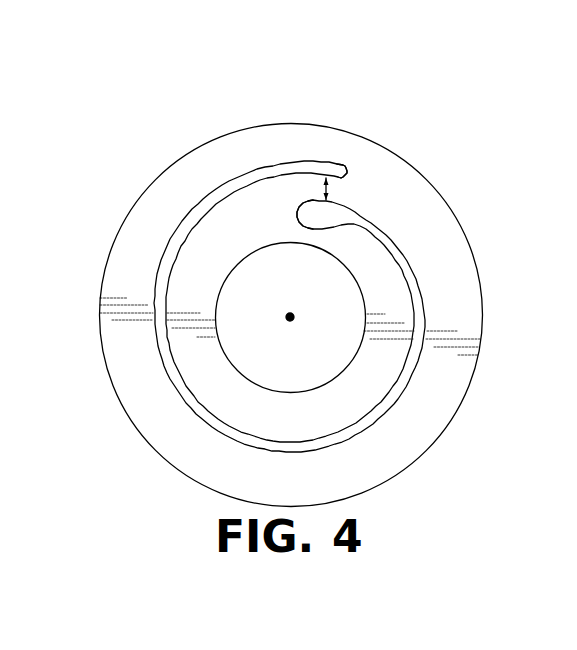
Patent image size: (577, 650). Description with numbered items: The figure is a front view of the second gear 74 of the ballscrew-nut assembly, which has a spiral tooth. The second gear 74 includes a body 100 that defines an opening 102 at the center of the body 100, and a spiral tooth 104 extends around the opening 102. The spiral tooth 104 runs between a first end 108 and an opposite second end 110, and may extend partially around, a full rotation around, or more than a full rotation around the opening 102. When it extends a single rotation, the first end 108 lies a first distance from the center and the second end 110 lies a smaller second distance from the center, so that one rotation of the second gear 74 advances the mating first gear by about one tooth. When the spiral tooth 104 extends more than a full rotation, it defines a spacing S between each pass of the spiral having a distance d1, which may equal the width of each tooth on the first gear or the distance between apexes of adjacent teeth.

The second gear 74 is at (422, 162).
The body 100 is at (290, 123).
The opening 102 is at (316, 343).
The spiral tooth 104 is at (210, 193).
The first end 108 is at (346, 170).
The second end 110 is at (325, 229).
The distance d1 is at (330, 190).
The spacing S is at (305, 187).